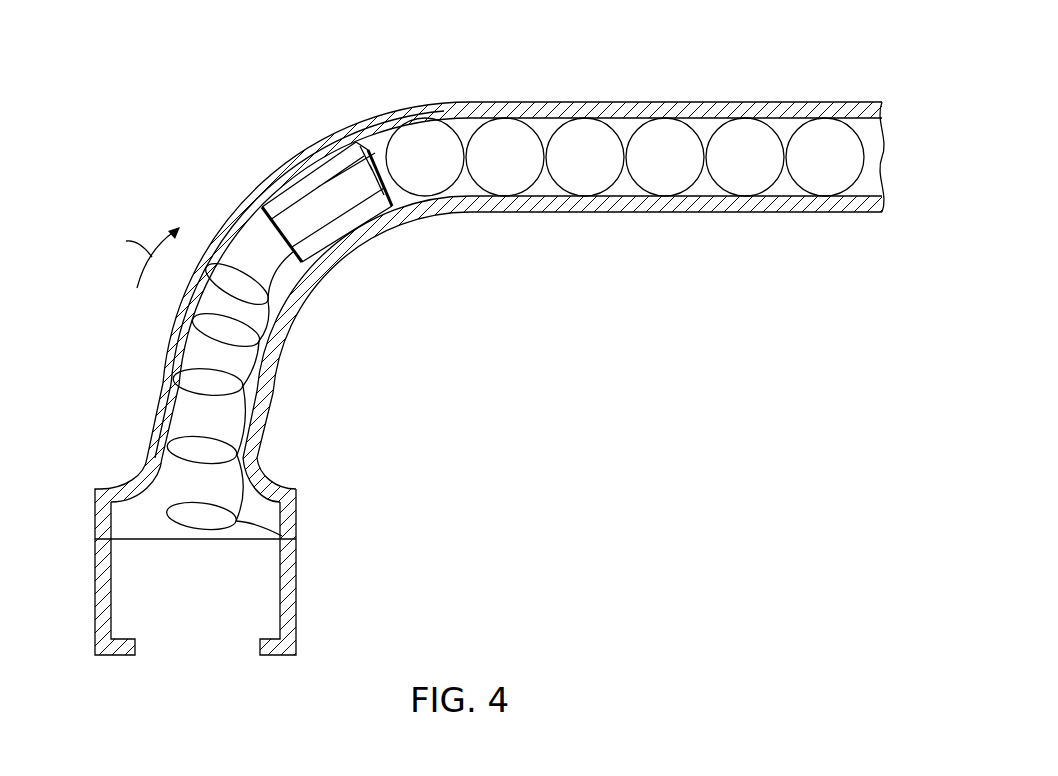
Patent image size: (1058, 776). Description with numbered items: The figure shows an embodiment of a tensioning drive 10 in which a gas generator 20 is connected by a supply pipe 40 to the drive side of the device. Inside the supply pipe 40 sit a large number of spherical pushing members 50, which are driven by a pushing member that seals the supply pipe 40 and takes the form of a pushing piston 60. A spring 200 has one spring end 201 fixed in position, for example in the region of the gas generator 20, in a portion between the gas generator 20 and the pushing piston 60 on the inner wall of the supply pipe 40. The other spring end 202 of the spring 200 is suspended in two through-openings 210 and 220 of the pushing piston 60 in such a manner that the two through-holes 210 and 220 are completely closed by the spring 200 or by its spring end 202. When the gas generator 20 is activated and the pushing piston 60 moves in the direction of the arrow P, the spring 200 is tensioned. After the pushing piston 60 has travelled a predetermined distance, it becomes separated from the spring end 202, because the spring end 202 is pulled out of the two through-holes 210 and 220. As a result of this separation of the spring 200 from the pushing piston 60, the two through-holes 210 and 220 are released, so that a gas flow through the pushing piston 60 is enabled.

The tensioning drive 10 is at (72, 239).
The gas generator 20 is at (122, 592).
The supply pipe 40 is at (262, 402).
The spherical pushing members 50 is at (735, 140).
The pushing piston 60 is at (329, 143).
The spring 200 is at (180, 368).
The spring end 201 is at (283, 532).
The spring end 202 is at (366, 142).
The through-opening 210 is at (365, 226).
The through-opening 220 is at (300, 192).